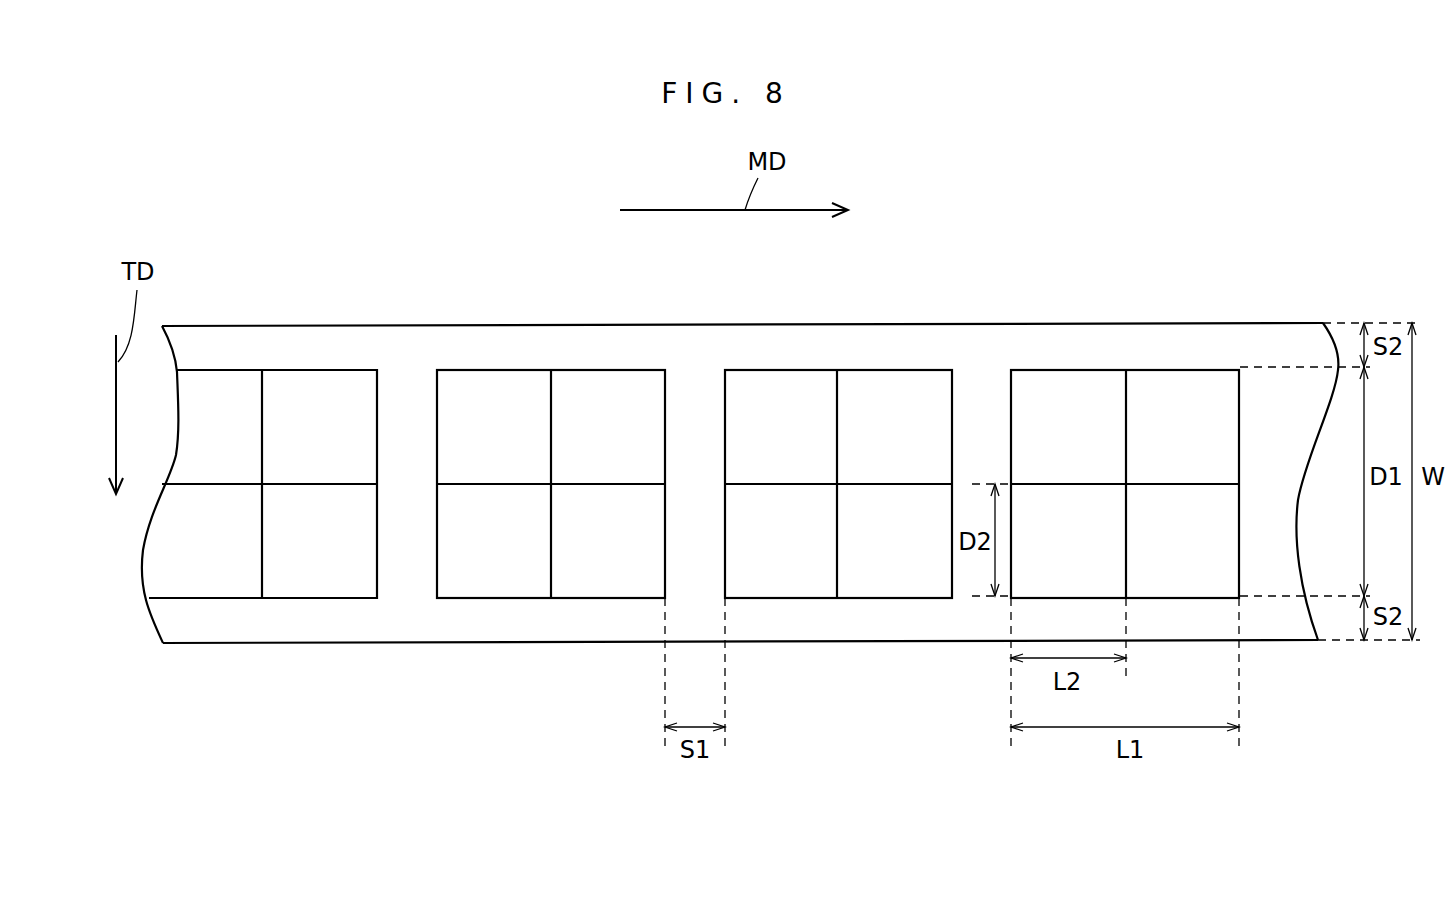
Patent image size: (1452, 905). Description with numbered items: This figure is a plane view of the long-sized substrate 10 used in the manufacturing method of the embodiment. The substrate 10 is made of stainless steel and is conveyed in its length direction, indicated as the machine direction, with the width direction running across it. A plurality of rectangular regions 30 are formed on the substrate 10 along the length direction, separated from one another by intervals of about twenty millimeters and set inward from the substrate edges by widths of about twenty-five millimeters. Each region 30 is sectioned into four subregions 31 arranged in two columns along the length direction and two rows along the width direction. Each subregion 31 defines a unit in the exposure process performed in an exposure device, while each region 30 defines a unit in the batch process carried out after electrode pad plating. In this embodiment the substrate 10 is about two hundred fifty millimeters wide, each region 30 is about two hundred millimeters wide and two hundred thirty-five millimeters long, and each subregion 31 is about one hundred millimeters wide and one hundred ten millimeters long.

The long-sized substrate 10 is at (543, 335).
The rectangular region 30 is at (230, 370).
The subregion 31 is at (503, 382).